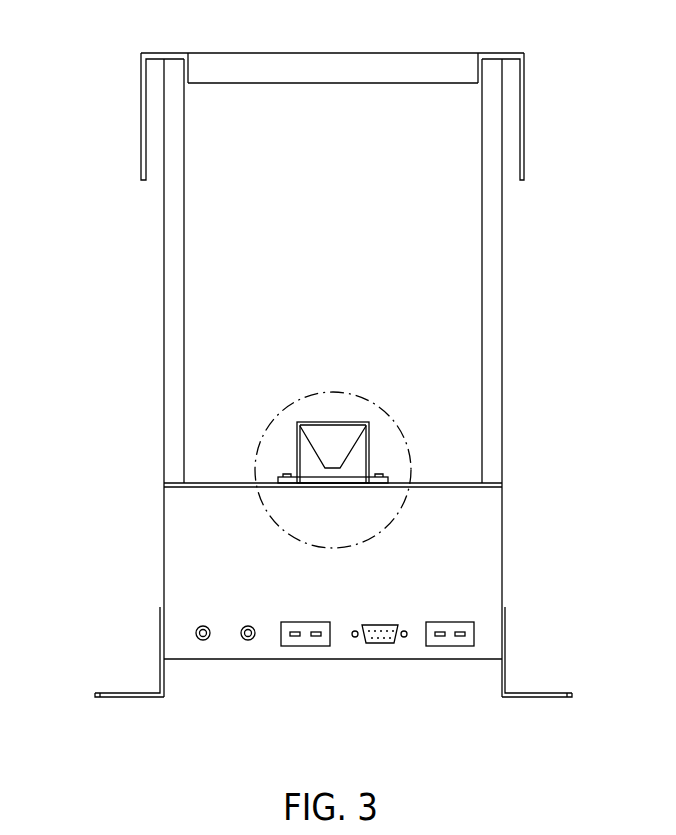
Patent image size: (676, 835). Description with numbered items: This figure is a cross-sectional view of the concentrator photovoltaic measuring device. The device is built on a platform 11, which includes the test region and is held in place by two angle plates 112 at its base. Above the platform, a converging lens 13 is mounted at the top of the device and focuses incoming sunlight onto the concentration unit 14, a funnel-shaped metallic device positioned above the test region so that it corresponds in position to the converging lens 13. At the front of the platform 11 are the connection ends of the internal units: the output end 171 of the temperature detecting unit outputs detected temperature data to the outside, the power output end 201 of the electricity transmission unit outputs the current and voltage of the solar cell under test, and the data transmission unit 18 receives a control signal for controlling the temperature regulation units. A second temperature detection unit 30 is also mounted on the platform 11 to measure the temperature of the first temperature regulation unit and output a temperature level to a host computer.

The platform 11 is at (492, 522).
The converging lens 13 is at (442, 53).
The concentration unit 14 is at (365, 427).
The angle plate 112 is at (127, 690).
The power output end 201 is at (203, 626).
The output end 171 is at (309, 646).
The data transmission unit 18 is at (388, 625).
The second temperature detection unit 30 is at (470, 634).